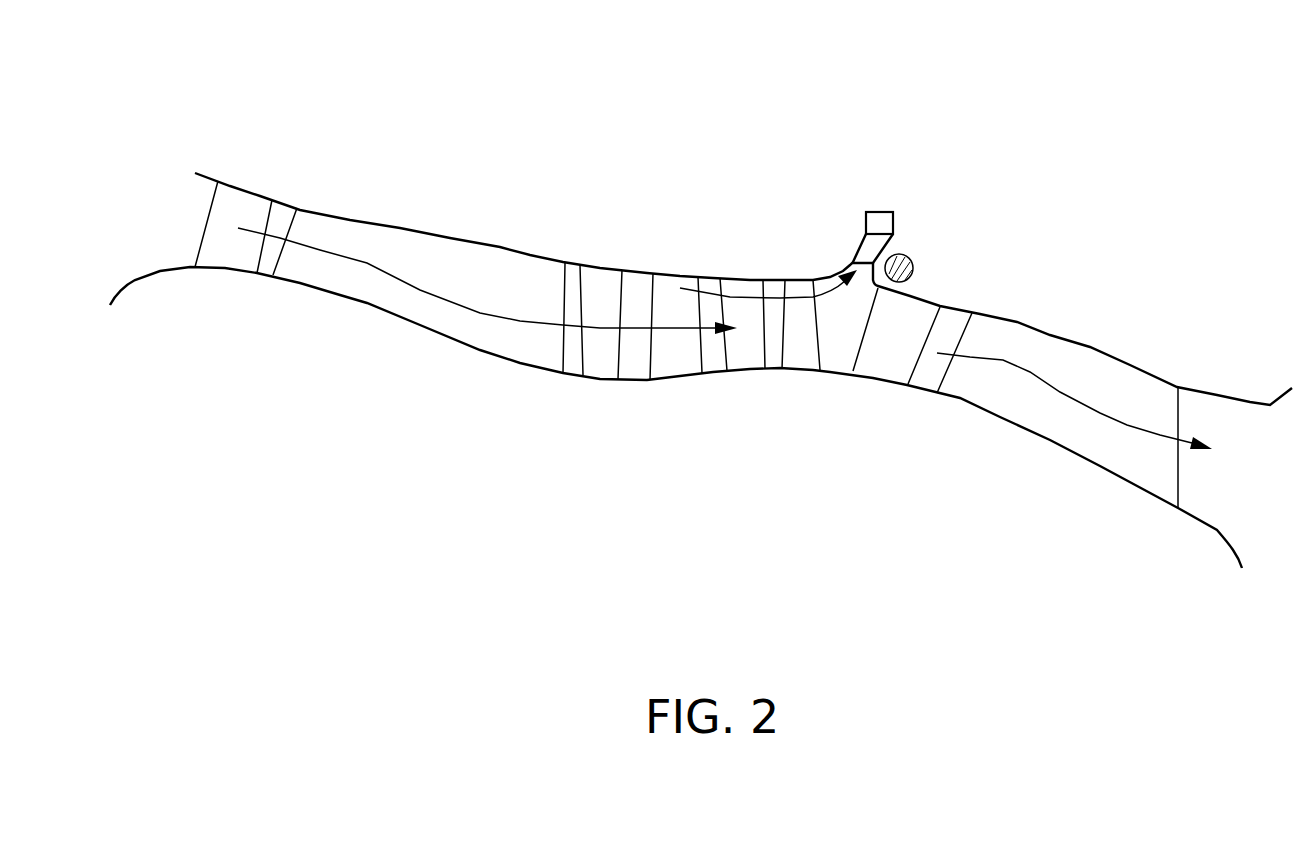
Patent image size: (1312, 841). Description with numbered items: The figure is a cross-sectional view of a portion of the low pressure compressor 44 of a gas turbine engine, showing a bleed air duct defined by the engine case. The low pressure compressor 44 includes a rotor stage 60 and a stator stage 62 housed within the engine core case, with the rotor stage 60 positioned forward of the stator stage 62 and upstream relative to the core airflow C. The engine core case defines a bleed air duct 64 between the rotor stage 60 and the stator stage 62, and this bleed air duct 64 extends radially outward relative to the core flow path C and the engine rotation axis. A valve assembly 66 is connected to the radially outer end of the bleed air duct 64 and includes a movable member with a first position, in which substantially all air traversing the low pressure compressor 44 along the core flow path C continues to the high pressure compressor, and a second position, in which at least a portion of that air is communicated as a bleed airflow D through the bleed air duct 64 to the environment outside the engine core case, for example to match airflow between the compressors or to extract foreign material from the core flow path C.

The low pressure compressor 44 is at (576, 530).
The rotor stage 60 is at (802, 355).
The stator stage 62 is at (898, 340).
The bleed air duct 64 is at (878, 245).
The valve assembly 66 is at (878, 222).
The core airflow C is at (487, 313).
The bleed airflow D is at (800, 305).